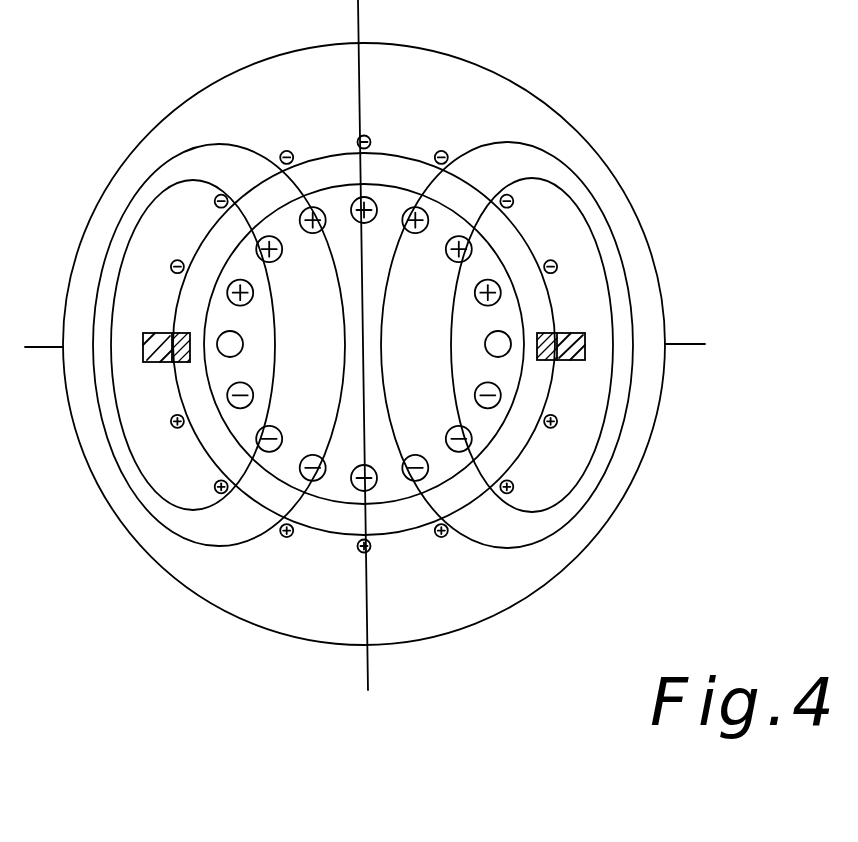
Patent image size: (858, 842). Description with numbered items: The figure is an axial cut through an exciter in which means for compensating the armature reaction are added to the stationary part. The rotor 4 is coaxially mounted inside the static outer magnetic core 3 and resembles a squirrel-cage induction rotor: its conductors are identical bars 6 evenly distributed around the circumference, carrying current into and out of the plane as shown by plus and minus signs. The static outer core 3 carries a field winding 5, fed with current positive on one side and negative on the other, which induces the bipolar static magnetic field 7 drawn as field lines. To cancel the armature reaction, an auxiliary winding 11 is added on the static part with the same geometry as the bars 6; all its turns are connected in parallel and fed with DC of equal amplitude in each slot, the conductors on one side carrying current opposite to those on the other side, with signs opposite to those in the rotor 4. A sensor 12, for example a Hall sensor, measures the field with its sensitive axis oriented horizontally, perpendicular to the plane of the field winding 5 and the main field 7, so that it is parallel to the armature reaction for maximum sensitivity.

The static outer magnetic core 3 is at (522, 115).
The rotor 4 is at (447, 462).
The field winding 5 is at (373, 360).
The bars 6 is at (371, 222).
The magnetic field 7 is at (363, 372).
The auxiliary winding 11 is at (292, 157).
The sensor 12 is at (175, 360).